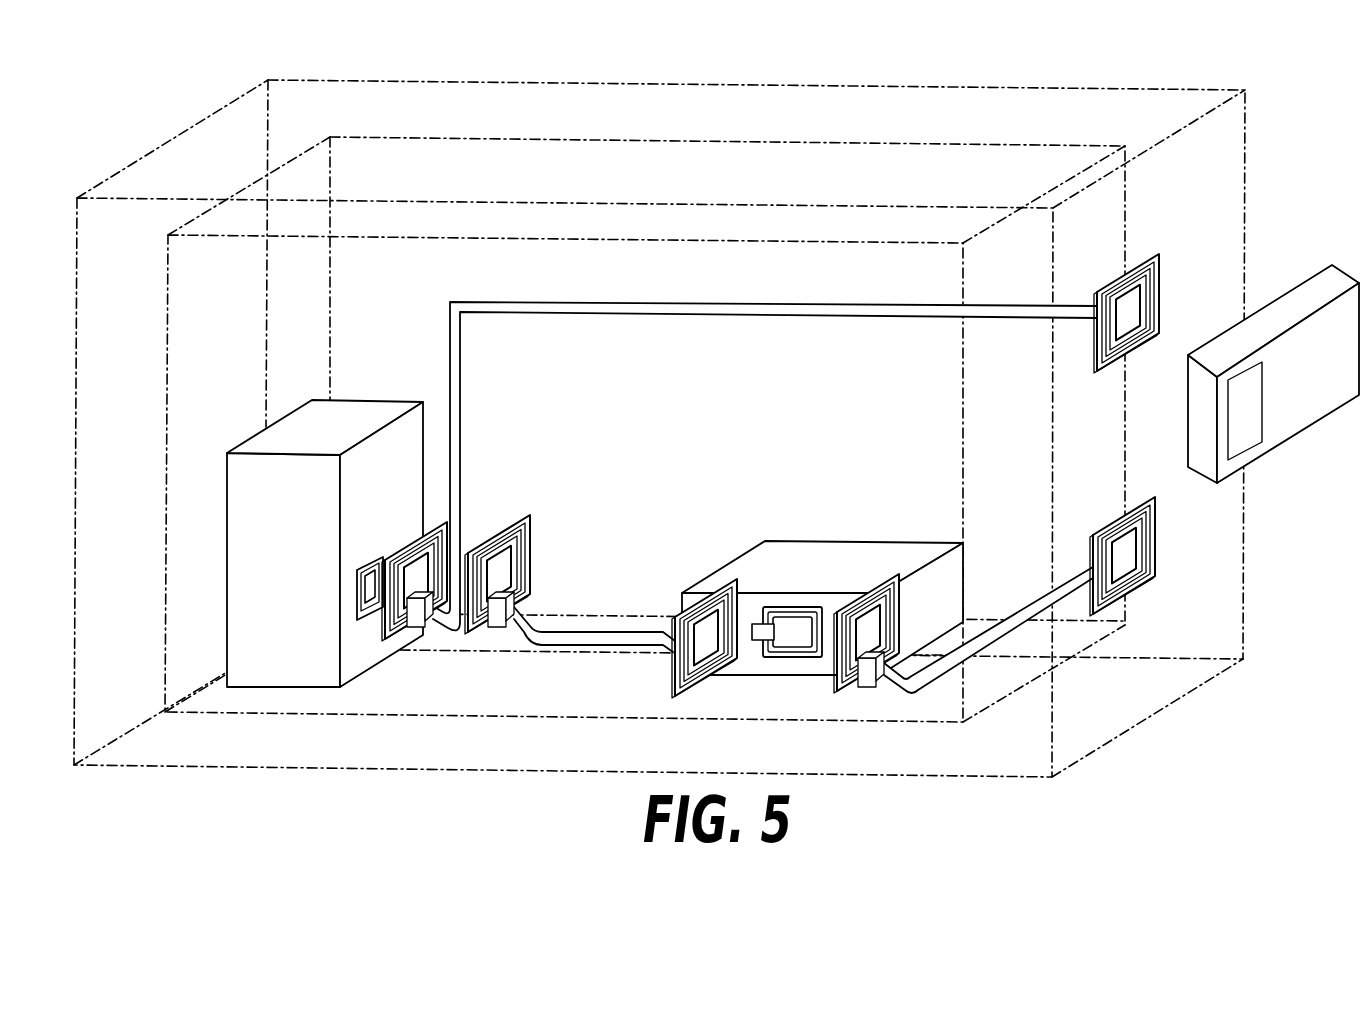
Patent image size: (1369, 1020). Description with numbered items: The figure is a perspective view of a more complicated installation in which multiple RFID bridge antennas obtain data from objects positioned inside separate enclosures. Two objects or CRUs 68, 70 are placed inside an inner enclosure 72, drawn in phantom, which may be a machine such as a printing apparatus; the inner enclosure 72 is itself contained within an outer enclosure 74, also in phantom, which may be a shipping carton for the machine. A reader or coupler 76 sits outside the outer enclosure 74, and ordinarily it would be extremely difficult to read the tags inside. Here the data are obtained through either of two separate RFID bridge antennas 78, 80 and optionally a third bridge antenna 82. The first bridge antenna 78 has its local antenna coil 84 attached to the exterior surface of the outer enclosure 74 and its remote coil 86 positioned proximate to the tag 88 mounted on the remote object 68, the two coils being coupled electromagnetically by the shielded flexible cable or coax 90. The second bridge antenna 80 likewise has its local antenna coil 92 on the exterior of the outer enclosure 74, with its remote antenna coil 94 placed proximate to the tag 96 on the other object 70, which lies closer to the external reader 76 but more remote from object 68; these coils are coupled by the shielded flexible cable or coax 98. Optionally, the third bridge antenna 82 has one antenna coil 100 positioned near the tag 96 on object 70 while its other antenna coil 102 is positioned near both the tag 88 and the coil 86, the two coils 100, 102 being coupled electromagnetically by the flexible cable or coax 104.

The object or CRU 68 is at (378, 400).
The object or CRU 70 is at (843, 541).
The inner enclosure 72 is at (772, 140).
The outer enclosure 74 is at (866, 85).
The reader or coupler 76 is at (1293, 290).
The first RFID bridge antenna 78 is at (650, 327).
The second RFID bridge antenna 80 is at (1013, 606).
The third RFID bridge antenna 82 is at (556, 604).
The local antenna coil 84 is at (1148, 262).
The remote antenna coil 86 is at (386, 636).
The tag 88 is at (375, 570).
The shielded flexible cable or coax 90 is at (760, 316).
The local antenna coil 92 is at (1107, 525).
The remote antenna coil 94 is at (874, 592).
The tag 96 is at (790, 607).
The shielded flexible cable or coax 98 is at (1000, 630).
The antenna coil 100 is at (677, 616).
The antenna coil 102 is at (497, 540).
The flexible cable or coax 104 is at (580, 648).